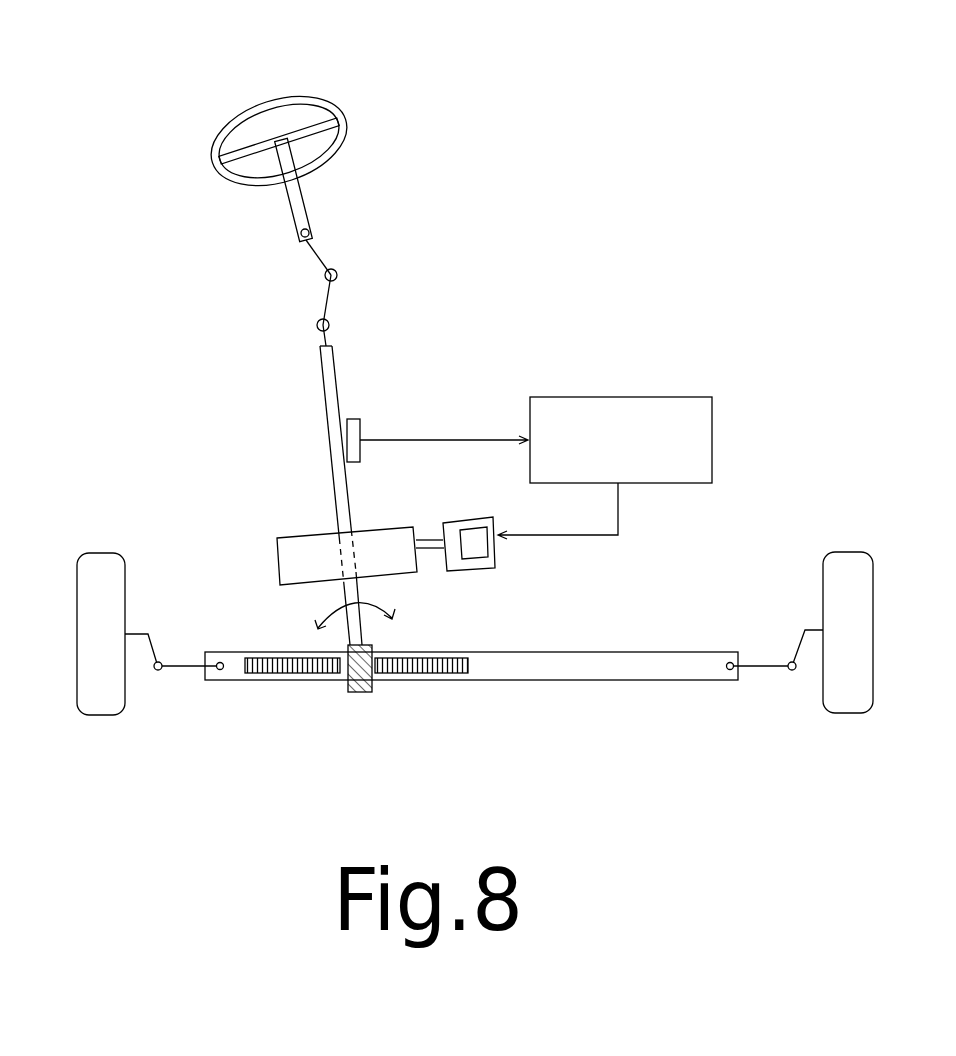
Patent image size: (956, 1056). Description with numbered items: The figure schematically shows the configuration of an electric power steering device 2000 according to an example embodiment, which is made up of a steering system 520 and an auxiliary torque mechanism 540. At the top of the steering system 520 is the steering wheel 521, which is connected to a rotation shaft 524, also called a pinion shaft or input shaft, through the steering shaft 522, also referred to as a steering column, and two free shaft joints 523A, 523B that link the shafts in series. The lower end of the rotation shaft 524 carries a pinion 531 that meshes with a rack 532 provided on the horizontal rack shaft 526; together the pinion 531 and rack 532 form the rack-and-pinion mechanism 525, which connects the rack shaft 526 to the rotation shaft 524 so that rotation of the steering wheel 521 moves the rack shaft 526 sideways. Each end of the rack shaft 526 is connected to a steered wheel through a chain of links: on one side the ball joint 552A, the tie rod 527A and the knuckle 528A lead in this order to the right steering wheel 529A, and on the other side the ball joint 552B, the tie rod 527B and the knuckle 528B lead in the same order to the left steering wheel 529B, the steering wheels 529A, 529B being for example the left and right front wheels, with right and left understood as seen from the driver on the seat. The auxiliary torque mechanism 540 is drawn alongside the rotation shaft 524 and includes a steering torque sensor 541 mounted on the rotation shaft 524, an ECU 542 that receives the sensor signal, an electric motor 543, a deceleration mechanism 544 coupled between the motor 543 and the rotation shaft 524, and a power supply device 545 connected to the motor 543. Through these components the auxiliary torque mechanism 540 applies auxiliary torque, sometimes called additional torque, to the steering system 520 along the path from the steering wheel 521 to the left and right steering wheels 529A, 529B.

The electric power steering device 2000 is at (519, 118).
The steering system 520 is at (277, 352).
The steering wheel 521 is at (224, 122).
The steering shaft 522 is at (305, 194).
The free shaft joint 523A is at (338, 271).
The free shaft joint 523B is at (329, 322).
The rotation shaft 524 is at (337, 380).
The rack-and-pinion mechanism 525 is at (378, 705).
The rack shaft 526 is at (520, 666).
The tie rod 527A is at (178, 663).
The tie rod 527B is at (772, 666).
The knuckle 528A is at (142, 630).
The knuckle 528B is at (803, 628).
The right steering wheel 529A is at (102, 707).
The left steering wheel 529B is at (845, 700).
The pinion 531 is at (348, 693).
The rack 532 is at (288, 674).
The auxiliary torque mechanism 540 is at (564, 352).
The steering torque sensor 541 is at (357, 420).
The ECU 542 is at (676, 402).
The electric motor 543 is at (470, 517).
The deceleration mechanism 544 is at (282, 538).
The power supply device 545 is at (477, 543).
The ball joint 552A is at (218, 670).
The ball joint 552B is at (730, 668).